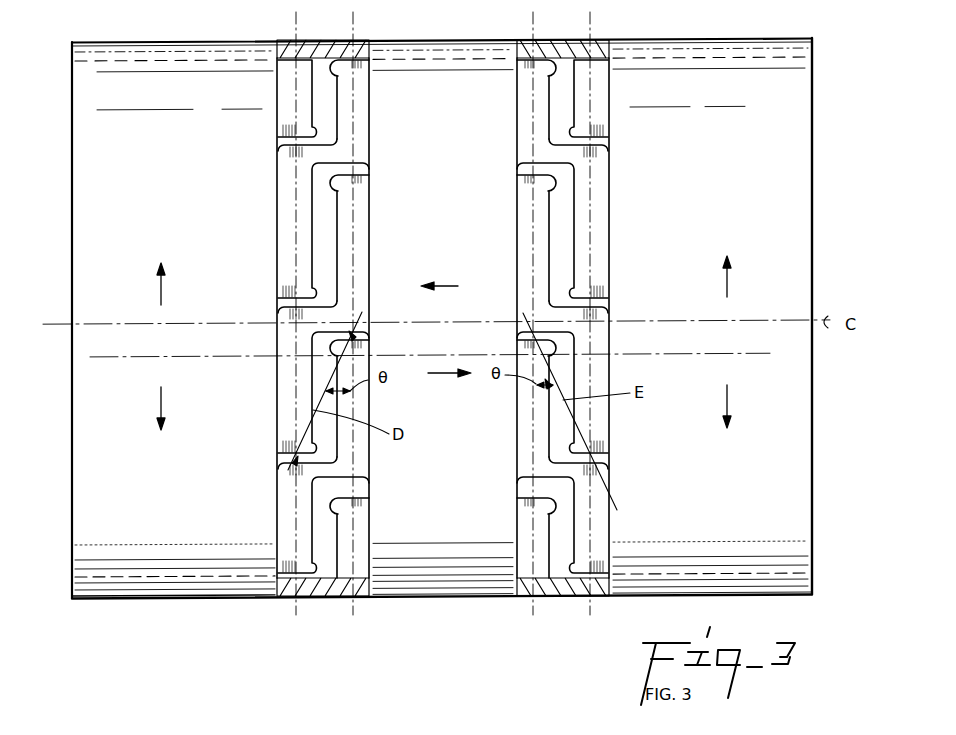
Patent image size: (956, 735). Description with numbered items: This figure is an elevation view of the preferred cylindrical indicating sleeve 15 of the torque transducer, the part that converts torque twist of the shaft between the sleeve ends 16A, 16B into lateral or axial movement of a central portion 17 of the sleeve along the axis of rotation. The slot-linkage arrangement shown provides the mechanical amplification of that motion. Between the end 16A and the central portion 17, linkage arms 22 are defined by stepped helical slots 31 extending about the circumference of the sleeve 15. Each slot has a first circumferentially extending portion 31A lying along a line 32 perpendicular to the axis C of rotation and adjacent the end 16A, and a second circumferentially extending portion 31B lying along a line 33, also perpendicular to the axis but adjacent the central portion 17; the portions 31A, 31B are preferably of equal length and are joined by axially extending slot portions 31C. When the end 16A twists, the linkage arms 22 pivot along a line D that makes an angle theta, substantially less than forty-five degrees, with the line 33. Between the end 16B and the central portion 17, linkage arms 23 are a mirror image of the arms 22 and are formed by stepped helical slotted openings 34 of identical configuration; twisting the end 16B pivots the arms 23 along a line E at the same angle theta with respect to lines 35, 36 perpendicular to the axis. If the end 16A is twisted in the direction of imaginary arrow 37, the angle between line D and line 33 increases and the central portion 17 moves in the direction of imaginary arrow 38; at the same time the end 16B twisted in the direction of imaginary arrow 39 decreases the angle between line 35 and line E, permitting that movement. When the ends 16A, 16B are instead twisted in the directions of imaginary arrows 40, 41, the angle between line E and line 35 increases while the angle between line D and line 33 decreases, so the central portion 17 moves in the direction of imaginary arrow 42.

The indicating sleeve 15 is at (460, 58).
The end of sleeve 16A is at (86, 338).
The end of sleeve 16B is at (812, 291).
The central portion 17 is at (450, 273).
The linkage arms 22 is at (323, 103).
The linkage arms 23 is at (563, 93).
The stepped helical slots 31 is at (285, 88).
The first circumferentially extending slot portions 31A is at (282, 374).
The second circumferentially extending slot portions 31B is at (358, 194).
The axially extending slot portions 31C is at (316, 171).
The line 32 is at (296, 231).
The line 33 is at (357, 134).
The stepped helical slotted openings 34 is at (592, 118).
The line 35 is at (542, 434).
The line 36 is at (592, 332).
The imaginary arrow 37 is at (160, 293).
The imaginary arrow 38 is at (428, 373).
The imaginary arrow 39 is at (727, 399).
The imaginary arrow 40 is at (160, 398).
The imaginary arrow 41 is at (727, 280).
The imaginary arrow 42 is at (452, 283).